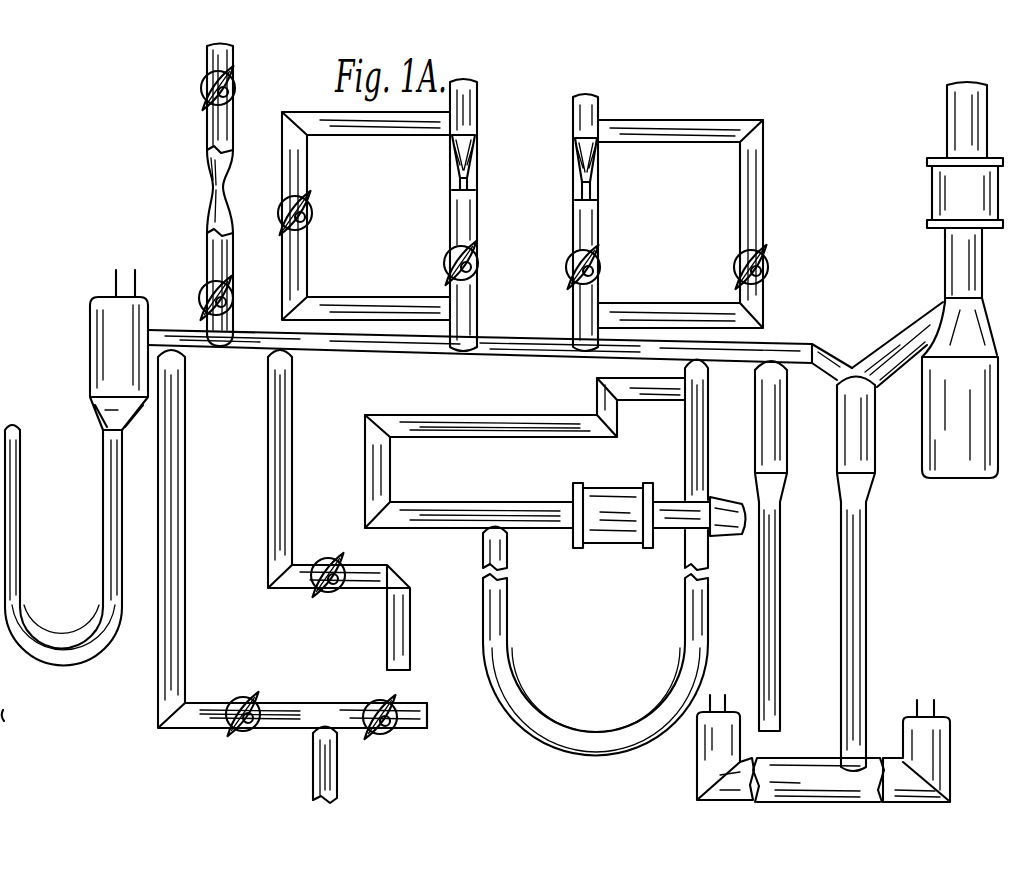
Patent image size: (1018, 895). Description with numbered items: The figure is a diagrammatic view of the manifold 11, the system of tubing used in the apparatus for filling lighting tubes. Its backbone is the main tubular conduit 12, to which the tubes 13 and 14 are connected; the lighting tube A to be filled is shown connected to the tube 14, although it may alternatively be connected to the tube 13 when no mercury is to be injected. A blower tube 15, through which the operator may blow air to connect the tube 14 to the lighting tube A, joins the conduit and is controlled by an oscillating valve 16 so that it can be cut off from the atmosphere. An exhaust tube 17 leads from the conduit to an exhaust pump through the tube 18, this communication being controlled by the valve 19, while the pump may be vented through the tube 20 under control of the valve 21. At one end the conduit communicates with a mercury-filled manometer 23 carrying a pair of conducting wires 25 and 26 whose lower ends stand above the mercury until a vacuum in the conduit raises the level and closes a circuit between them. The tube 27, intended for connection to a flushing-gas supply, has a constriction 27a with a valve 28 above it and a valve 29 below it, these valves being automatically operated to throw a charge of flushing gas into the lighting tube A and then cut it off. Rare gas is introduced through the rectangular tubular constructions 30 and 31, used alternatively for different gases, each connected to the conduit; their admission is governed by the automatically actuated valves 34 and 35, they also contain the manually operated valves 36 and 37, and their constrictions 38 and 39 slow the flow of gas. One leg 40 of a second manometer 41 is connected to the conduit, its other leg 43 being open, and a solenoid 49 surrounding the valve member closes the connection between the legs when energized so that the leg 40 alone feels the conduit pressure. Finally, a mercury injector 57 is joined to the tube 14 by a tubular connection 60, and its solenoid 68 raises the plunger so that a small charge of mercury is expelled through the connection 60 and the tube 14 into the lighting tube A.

The manifold 11 is at (431, 370).
The main tubular conduit 12 is at (540, 360).
The tube 13 is at (768, 420).
The tube 14 is at (845, 508).
The blower tube 15 is at (288, 512).
The oscillating valve 16 is at (318, 592).
The exhaust tube 17 is at (185, 540).
The tube 18 is at (318, 762).
The valve 19 is at (262, 702).
The vent tube 20 is at (416, 712).
The valve 21 is at (385, 733).
The manometer 23 is at (108, 548).
The conducting wire 25 is at (116, 270).
The conducting wire 26 is at (135, 270).
The tube 27 is at (215, 130).
The constriction 27a is at (212, 188).
The valve 28 is at (205, 85).
The valve 29 is at (207, 297).
The rectangular tubular construction 30 is at (452, 212).
The rectangular tubular construction 31 is at (597, 222).
The valve 34 is at (478, 255).
The valve 35 is at (600, 266).
The manually-operated valve 36 is at (310, 210).
The manually-operated valve 37 is at (767, 262).
The constriction 38 is at (476, 160).
The constriction 39 is at (600, 170).
The leg 40 is at (695, 618).
The manometer 41 is at (526, 493).
The leg 43 is at (497, 638).
The solenoid 49 is at (625, 543).
The mercury injector 57 is at (957, 310).
The tubular connection 60 is at (905, 340).
The solenoid 68 is at (952, 185).
The lighting tube A is at (790, 772).